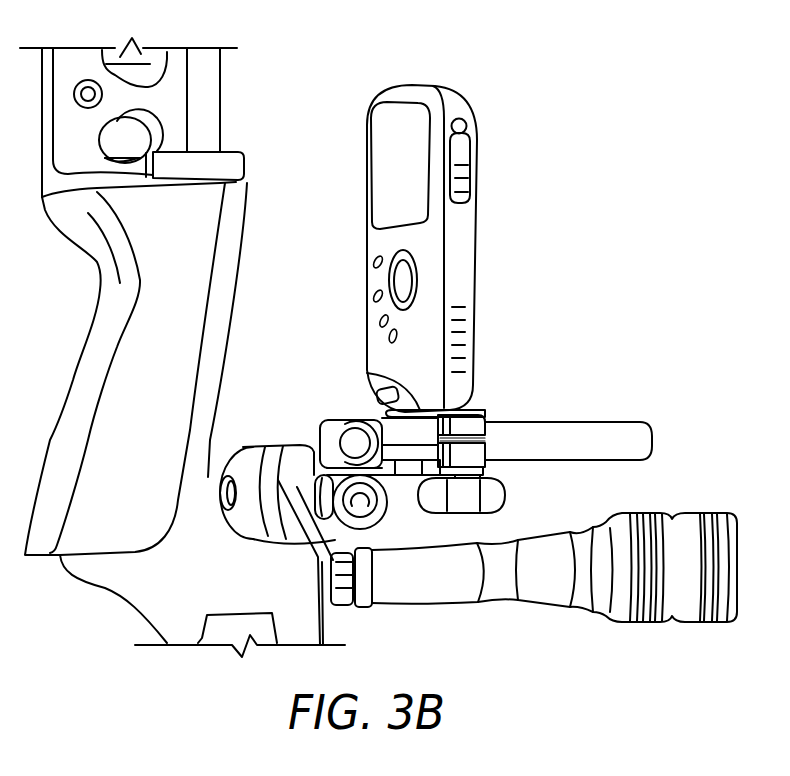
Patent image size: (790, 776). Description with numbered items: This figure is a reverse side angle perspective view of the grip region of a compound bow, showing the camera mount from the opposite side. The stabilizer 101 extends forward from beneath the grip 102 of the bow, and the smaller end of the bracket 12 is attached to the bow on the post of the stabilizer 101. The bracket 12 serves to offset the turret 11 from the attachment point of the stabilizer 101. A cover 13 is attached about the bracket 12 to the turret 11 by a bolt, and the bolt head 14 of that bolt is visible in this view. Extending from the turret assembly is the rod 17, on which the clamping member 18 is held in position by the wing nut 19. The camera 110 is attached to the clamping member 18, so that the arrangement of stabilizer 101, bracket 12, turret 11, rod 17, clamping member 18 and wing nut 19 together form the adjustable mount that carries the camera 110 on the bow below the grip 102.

The turret 11 is at (292, 443).
The bracket 12 is at (387, 532).
The cover 13 is at (245, 445).
The bolt head 14 is at (215, 483).
The rod 17 is at (593, 430).
The clamping member 18 is at (478, 413).
The wing nut 19 is at (500, 495).
The stabilizer 101 is at (477, 607).
The grip 102 is at (152, 423).
The camera 110 is at (428, 213).